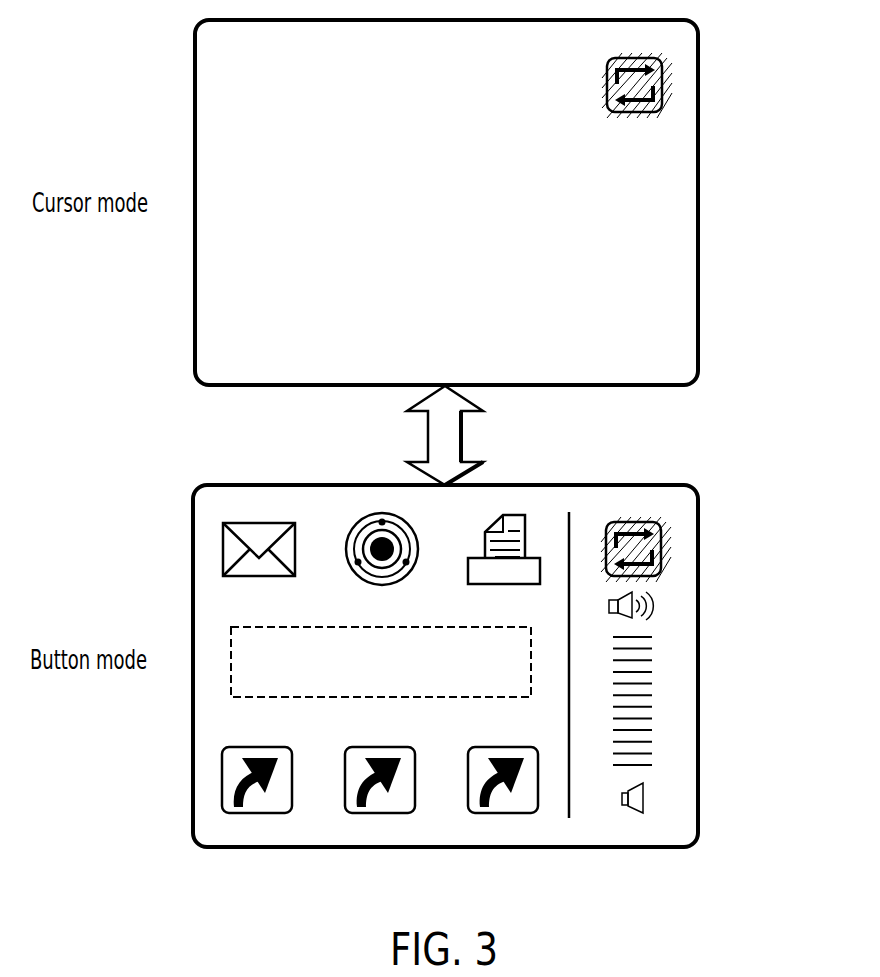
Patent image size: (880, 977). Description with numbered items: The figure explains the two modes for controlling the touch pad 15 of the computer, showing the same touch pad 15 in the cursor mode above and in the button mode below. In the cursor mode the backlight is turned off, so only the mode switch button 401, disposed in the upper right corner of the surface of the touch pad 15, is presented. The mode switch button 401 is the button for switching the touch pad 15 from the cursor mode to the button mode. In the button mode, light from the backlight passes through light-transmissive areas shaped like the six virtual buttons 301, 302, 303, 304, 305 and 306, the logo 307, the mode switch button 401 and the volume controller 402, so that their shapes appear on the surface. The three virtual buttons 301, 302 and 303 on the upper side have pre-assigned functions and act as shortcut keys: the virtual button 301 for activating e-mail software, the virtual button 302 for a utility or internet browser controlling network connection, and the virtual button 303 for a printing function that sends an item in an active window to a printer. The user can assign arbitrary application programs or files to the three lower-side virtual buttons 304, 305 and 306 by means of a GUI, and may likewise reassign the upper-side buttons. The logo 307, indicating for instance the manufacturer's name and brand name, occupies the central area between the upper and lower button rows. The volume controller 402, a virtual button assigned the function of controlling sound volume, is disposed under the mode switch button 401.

The touch pad 15 is at (700, 365).
The virtual button 301 is at (253, 523).
The virtual button 302 is at (370, 513).
The virtual button 303 is at (504, 515).
The virtual button 304 is at (257, 813).
The virtual button 305 is at (380, 813).
The virtual button 306 is at (503, 813).
The logo 307 is at (230, 688).
The mode switch button 401 is at (662, 85).
The volume controller 402 is at (655, 699).